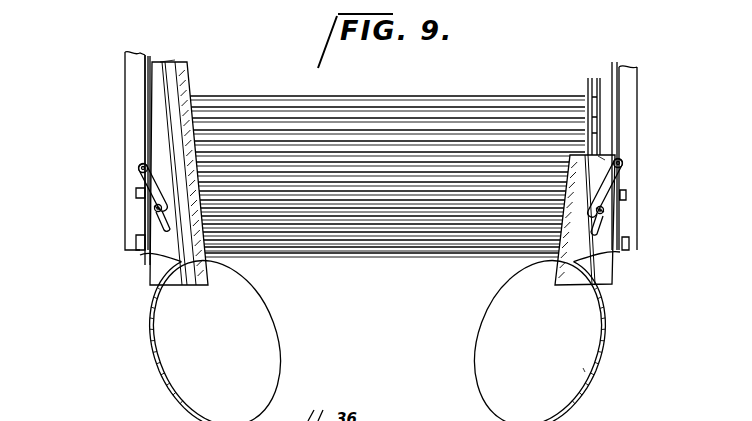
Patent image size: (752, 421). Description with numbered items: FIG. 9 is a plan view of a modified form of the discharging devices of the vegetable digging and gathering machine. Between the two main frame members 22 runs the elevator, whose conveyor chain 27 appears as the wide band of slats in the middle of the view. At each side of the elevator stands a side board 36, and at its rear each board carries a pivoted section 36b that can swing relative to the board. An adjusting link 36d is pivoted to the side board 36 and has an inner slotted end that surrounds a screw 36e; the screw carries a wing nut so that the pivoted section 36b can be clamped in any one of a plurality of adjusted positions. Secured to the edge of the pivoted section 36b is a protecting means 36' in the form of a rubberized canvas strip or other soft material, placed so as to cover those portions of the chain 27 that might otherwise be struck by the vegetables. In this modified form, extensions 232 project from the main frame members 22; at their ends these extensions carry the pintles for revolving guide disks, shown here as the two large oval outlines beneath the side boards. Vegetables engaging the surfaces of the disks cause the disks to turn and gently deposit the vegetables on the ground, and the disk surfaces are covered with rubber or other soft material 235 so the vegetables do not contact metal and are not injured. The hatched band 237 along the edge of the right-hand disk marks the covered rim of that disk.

The main frame member 22 is at (132, 91).
The chain 27 is at (588, 84).
The side board 36 is at (381, 145).
The protecting means 36' is at (382, 189).
The pivoted section 36b is at (660, 160).
The adjusting link 36d is at (660, 188).
The screw 36e is at (660, 221).
The extension 232 is at (608, 292).
The soft material covering 235 is at (263, 343).
The hoop hatch 237 is at (586, 371).